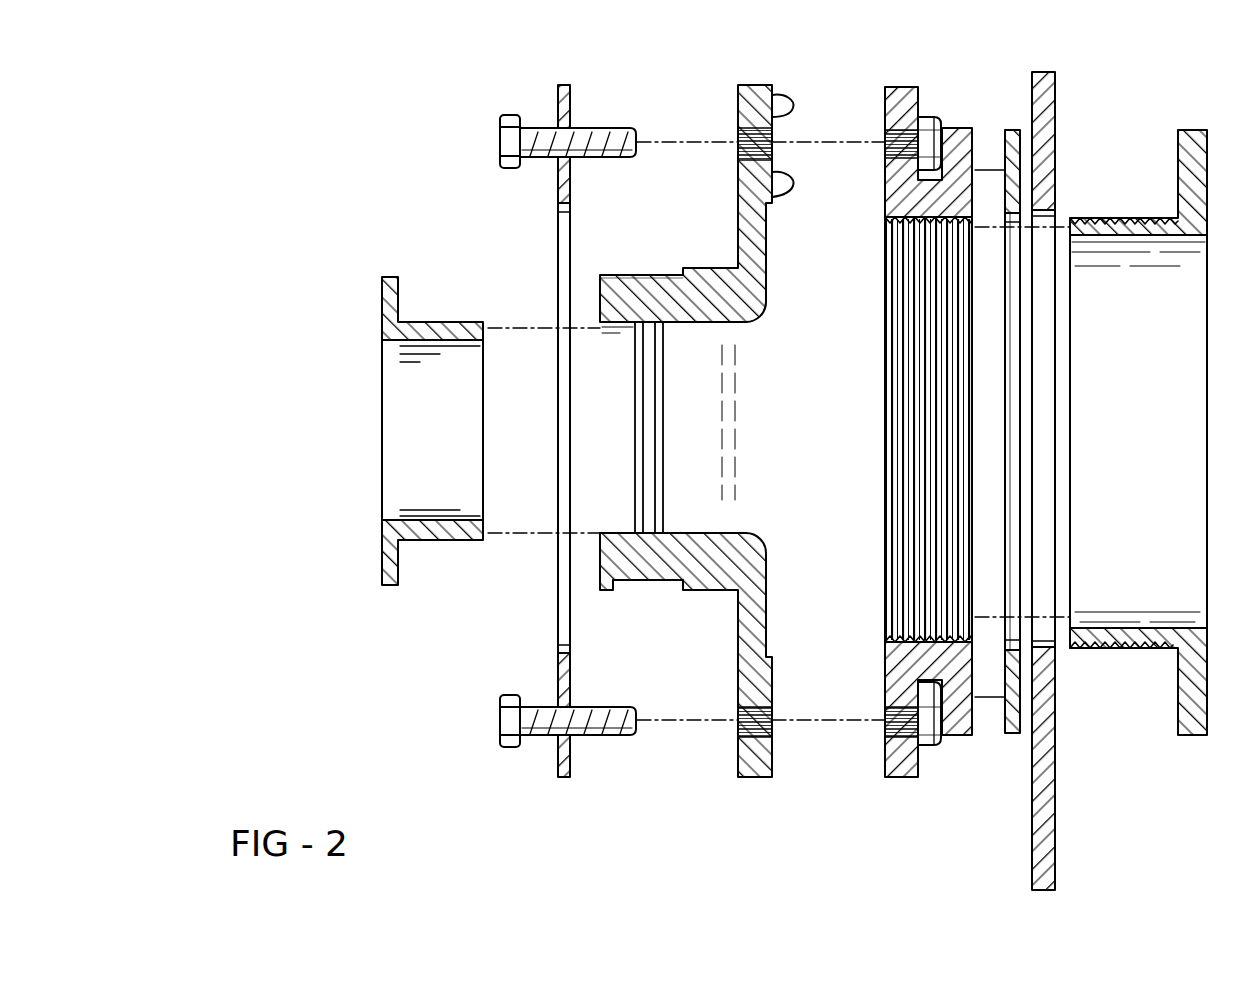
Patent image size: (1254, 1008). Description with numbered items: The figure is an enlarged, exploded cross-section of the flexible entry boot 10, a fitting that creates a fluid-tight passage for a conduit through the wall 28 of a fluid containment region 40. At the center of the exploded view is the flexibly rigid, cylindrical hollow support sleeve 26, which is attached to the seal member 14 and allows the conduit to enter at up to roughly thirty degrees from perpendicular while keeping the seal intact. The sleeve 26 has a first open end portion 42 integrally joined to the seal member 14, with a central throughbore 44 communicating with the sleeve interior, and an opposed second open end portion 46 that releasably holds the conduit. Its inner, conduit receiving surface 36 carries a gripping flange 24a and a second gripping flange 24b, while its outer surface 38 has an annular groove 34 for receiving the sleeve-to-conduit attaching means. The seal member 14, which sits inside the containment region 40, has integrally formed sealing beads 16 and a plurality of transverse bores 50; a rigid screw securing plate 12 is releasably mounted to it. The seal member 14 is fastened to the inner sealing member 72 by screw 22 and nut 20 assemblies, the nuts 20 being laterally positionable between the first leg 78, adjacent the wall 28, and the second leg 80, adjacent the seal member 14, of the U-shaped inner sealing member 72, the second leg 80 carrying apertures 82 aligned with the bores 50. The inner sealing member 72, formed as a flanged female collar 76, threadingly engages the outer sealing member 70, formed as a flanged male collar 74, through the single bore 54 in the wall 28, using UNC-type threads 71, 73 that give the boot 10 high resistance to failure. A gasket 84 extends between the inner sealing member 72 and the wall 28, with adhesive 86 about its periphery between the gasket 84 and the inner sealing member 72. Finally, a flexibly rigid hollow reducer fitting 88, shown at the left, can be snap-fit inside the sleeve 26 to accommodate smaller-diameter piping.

The flexible entry boot 10 is at (322, 266).
The screw securing plate 12 is at (558, 87).
The seal member 14 is at (729, 436).
The sealing beads 16 is at (792, 98).
The nut 20 is at (930, 748).
The screw 22 is at (540, 737).
The gripping flange 24a is at (666, 403).
The second gripping flange 24b is at (638, 480).
The hollow support sleeve 26 is at (690, 592).
The wall 28 is at (1078, 478).
The annular groove 34 is at (628, 276).
The inner, conduit receiving surface 36 is at (720, 534).
The outer surface 38 is at (728, 596).
The fluid containment region 40 is at (676, 446).
The first open end portion 42 is at (752, 325).
The central throughbore 44 is at (700, 325).
The second open end portion 46 is at (622, 592).
The bores 50 is at (756, 150).
The bore 54 is at (1043, 655).
The outer sealing member 70 is at (1157, 407).
The threads 71 is at (1148, 175).
The inner sealing member 72 is at (905, 441).
The threads 73 is at (920, 640).
The flanged male collar 74 is at (1128, 650).
The flanged female collar 76 is at (985, 737).
The first leg 78 is at (950, 128).
The second leg 80 is at (893, 88).
The apertures 82 is at (885, 728).
The gasket 84 is at (1054, 486).
The adhesive 86 is at (1005, 735).
The reducer fitting 88 is at (435, 548).